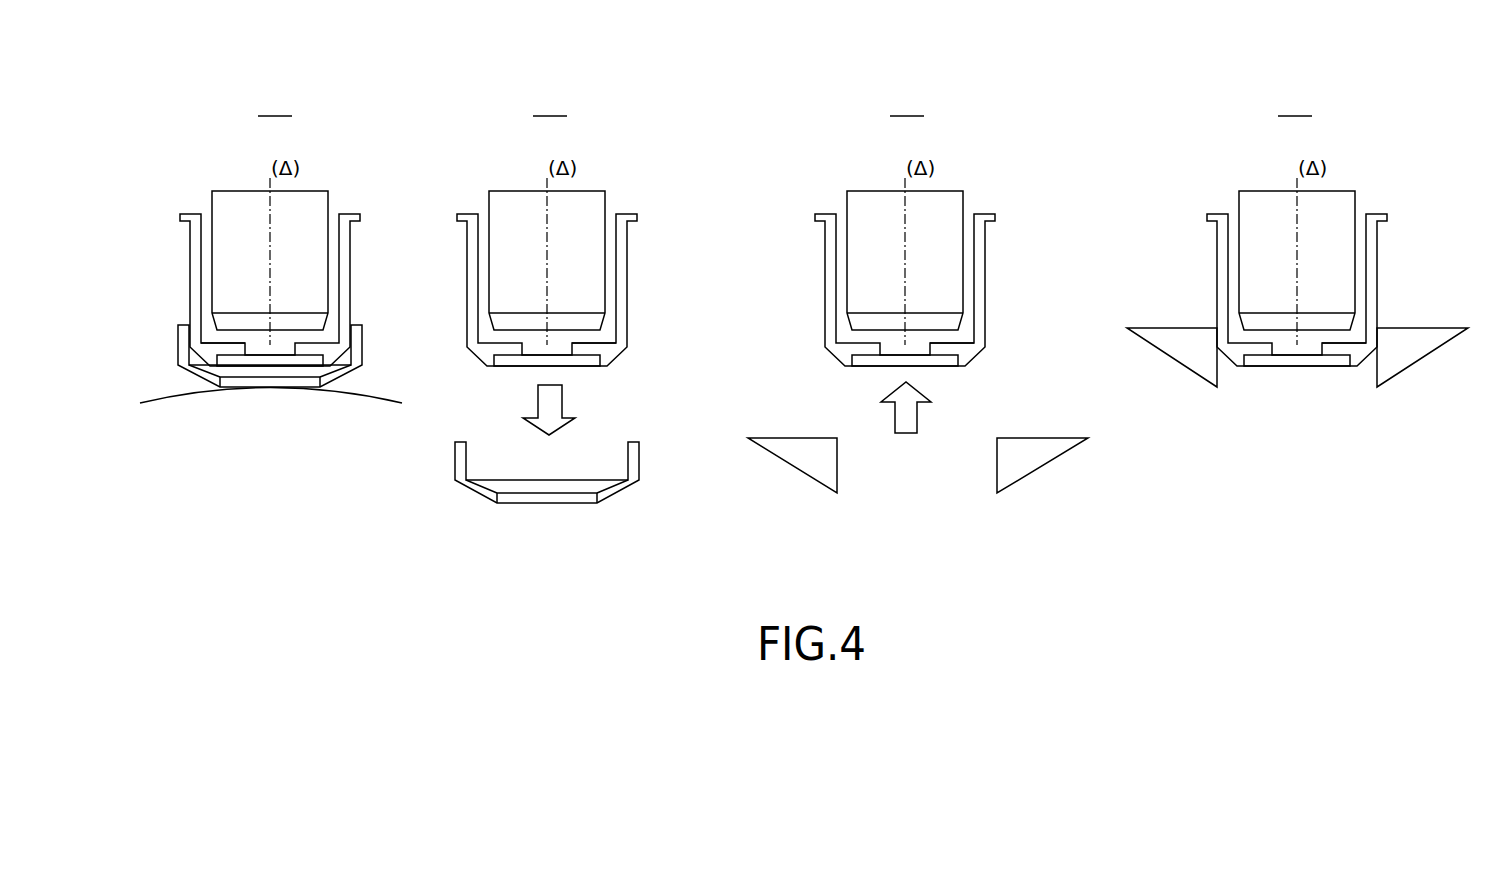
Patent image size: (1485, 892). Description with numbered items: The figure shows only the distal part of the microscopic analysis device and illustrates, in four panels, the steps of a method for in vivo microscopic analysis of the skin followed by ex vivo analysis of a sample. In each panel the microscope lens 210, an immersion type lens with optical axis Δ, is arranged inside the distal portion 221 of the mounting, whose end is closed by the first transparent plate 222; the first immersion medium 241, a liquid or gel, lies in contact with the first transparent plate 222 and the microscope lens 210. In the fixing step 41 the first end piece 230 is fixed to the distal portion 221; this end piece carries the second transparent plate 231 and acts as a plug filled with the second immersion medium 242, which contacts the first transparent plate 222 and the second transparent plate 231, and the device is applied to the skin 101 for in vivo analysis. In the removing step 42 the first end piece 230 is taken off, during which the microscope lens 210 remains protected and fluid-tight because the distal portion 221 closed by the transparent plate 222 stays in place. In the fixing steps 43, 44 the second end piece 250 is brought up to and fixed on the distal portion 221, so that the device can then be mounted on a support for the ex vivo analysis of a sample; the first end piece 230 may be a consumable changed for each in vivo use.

The fixing step 41 is at (275, 103).
The removing step 42 is at (550, 103).
The fixing step 43 is at (907, 103).
The fixing step 44 is at (1295, 103).
The curved reference surface 101 is at (172, 413).
The microscope lens 210 is at (307, 207).
The distal portion 221 is at (353, 273).
The first transparent plate 222 is at (227, 362).
The first end piece 230 is at (367, 343).
The second transparent plate 231 is at (293, 382).
The first immersion medium 241 is at (213, 340).
The second immersion medium 242 is at (317, 372).
The second end piece 250 is at (1037, 458).